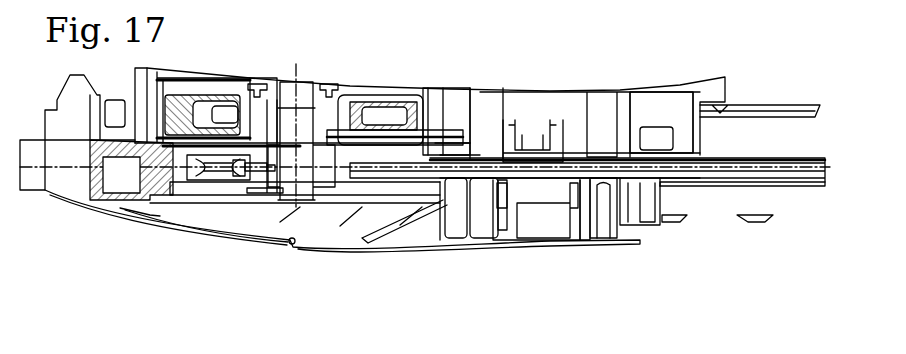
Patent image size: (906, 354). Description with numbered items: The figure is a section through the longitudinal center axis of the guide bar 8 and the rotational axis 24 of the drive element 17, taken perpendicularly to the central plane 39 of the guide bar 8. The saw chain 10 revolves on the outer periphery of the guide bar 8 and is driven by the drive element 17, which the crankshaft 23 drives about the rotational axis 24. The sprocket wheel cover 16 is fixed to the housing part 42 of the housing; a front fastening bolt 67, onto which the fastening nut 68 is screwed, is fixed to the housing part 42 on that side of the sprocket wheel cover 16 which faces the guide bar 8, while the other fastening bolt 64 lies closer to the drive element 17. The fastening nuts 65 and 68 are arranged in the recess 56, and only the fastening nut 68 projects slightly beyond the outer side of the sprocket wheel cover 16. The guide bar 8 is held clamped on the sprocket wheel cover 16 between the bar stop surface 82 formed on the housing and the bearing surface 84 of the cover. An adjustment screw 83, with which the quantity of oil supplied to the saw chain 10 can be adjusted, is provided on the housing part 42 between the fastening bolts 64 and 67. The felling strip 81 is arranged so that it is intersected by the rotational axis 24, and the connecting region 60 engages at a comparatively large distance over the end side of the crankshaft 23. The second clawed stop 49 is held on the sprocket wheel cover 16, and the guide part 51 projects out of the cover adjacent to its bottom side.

The guide bar 8 is at (702, 173).
The saw chain 10 is at (200, 169).
The sprocket wheel cover 16 is at (350, 237).
The drive element 17 is at (361, 107).
The crankshaft 23 is at (300, 120).
The rotational axis 24 is at (289, 79).
The central plane 39 is at (750, 163).
The housing part 42 is at (450, 103).
The second clawed stop 49 is at (676, 222).
The guide part 51 is at (147, 178).
The recess 56 is at (543, 230).
The connecting region 60 is at (243, 230).
The fastening bolt 64 is at (484, 223).
The fastening nut 65 is at (453, 226).
The front fastening bolt 67 is at (601, 228).
The fastening nut 68 is at (577, 228).
The felling strip 81 is at (293, 245).
The bar stop surface 82 is at (653, 160).
The adjustment screw 83 is at (522, 218).
The bearing surface 84 is at (636, 180).